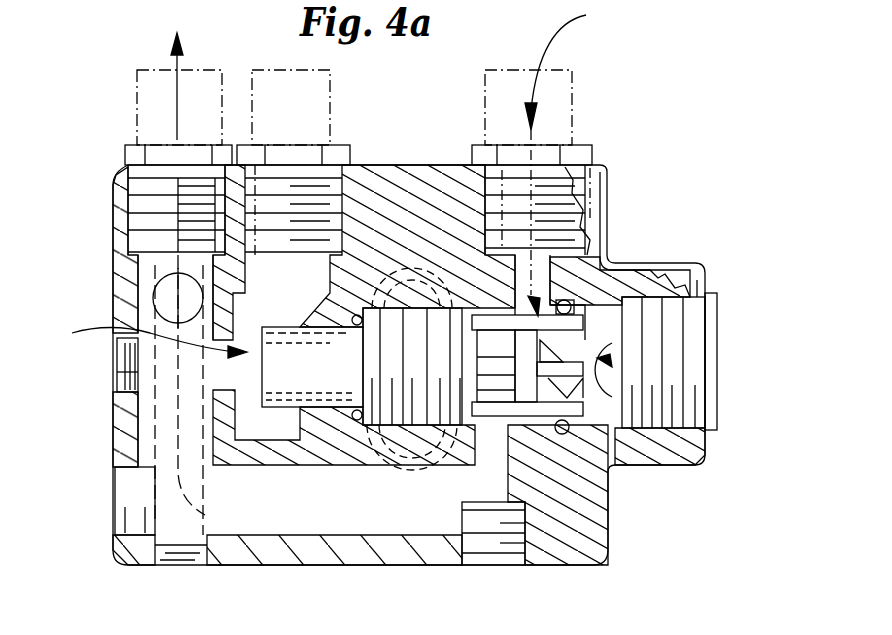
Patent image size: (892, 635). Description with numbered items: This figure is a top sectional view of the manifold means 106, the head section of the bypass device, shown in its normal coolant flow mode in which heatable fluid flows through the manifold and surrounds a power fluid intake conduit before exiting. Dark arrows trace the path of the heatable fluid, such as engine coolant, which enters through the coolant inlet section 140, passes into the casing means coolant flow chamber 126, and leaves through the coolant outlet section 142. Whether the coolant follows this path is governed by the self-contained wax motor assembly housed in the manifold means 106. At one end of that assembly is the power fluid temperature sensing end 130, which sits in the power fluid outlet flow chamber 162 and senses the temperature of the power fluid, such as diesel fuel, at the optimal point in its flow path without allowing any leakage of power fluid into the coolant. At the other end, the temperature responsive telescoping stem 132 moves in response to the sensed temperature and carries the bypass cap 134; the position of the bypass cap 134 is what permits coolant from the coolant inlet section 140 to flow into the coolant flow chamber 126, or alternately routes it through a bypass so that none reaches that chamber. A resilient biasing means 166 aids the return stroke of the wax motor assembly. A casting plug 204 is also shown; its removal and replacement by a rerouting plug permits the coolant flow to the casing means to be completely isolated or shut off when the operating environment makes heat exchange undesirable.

The manifold means 106 is at (610, 556).
The coolant outlet section 142 is at (137, 97).
The coolant inlet section 140 is at (577, 118).
The power fluid outlet flow chamber 162 is at (141, 395).
The power fluid temperature sensing end 130 is at (262, 372).
The telescoping stem 132 is at (502, 347).
The bypass cap 134 is at (588, 312).
The resilient biasing means 166 is at (590, 380).
The casing means coolant flow chamber 126 is at (615, 353).
The plug 204 is at (718, 395).